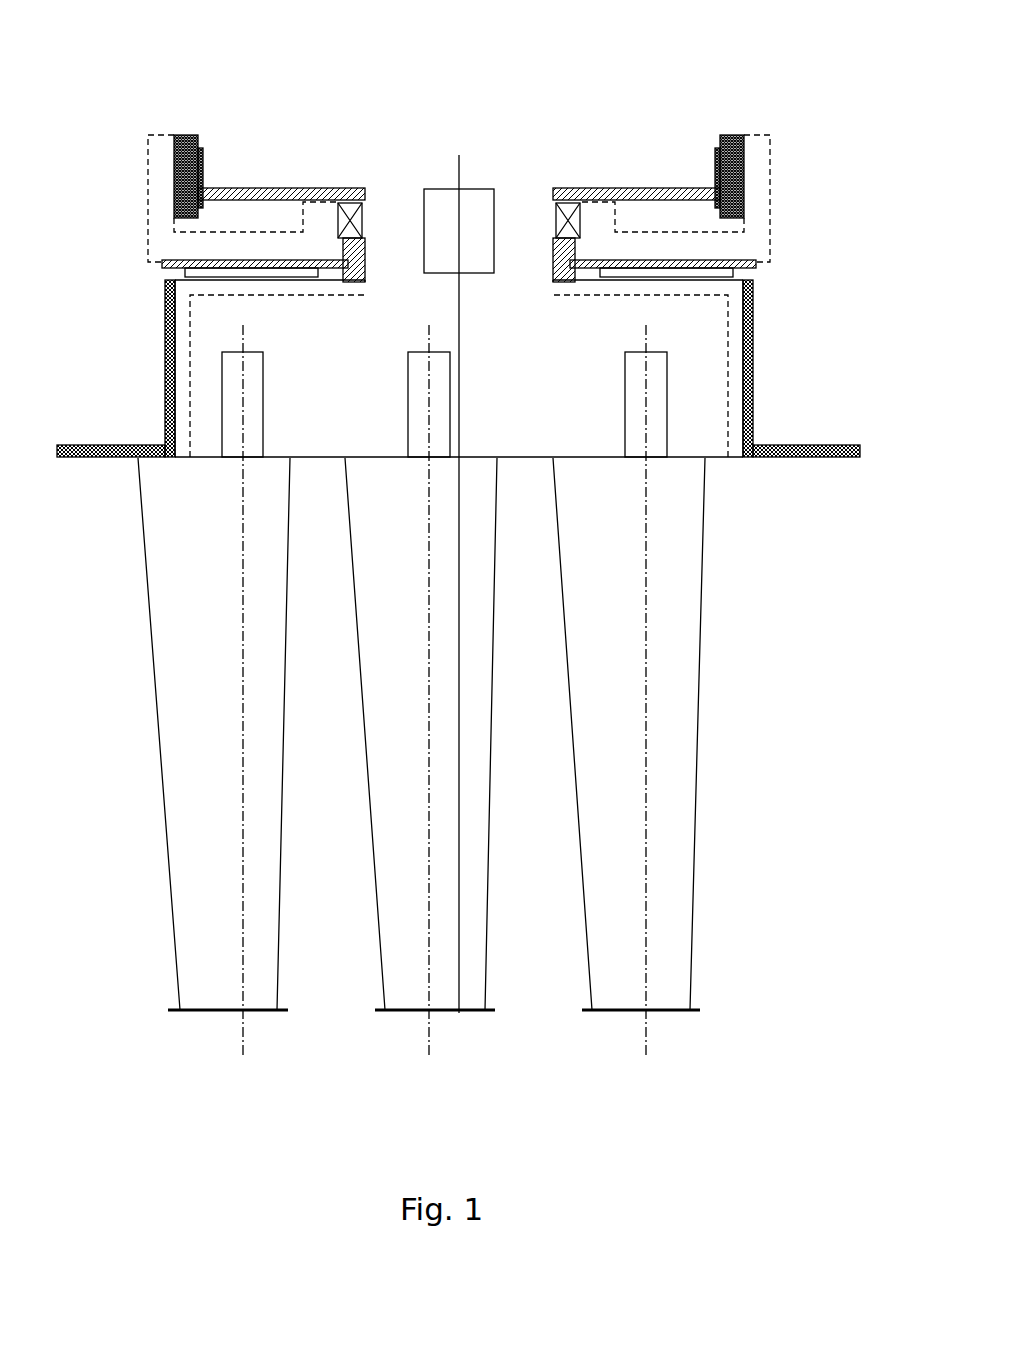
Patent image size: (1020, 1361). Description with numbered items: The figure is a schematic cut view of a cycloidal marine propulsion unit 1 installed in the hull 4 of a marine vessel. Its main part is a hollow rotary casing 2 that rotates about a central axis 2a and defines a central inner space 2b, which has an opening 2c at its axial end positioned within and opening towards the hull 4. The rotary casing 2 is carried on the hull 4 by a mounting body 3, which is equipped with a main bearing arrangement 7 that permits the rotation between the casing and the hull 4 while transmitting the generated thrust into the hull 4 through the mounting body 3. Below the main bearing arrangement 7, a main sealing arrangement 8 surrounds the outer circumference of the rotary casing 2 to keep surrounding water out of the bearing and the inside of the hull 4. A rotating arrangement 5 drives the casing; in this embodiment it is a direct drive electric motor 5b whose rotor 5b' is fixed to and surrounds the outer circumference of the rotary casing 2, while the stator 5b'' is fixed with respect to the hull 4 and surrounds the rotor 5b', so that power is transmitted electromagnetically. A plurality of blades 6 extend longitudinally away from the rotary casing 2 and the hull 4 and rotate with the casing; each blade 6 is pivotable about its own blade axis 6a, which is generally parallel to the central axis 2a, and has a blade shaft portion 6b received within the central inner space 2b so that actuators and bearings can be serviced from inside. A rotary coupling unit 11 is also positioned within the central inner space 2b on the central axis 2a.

The cycloidal marine propulsion unit 1 is at (817, 1198).
The hollow rotary casing 2 is at (753, 357).
The central axis 2a is at (460, 167).
The central inner space 2b is at (702, 405).
The opening 2c is at (371, 182).
The mounting body 3 is at (238, 233).
The hull 4 is at (173, 333).
The rotating arrangement 5 is at (179, 128).
The direct drive electric motor 5b is at (188, 176).
The rotor 5b' is at (685, 145).
The stator 5b'' is at (766, 125).
The blades 6 is at (195, 659).
The blade axes 6a is at (243, 1035).
The blade shaft portion 6b is at (260, 421).
The main bearing arrangement 7 is at (548, 212).
The main sealing arrangement 8 is at (575, 268).
The rotary coupling unit 11 is at (413, 200).